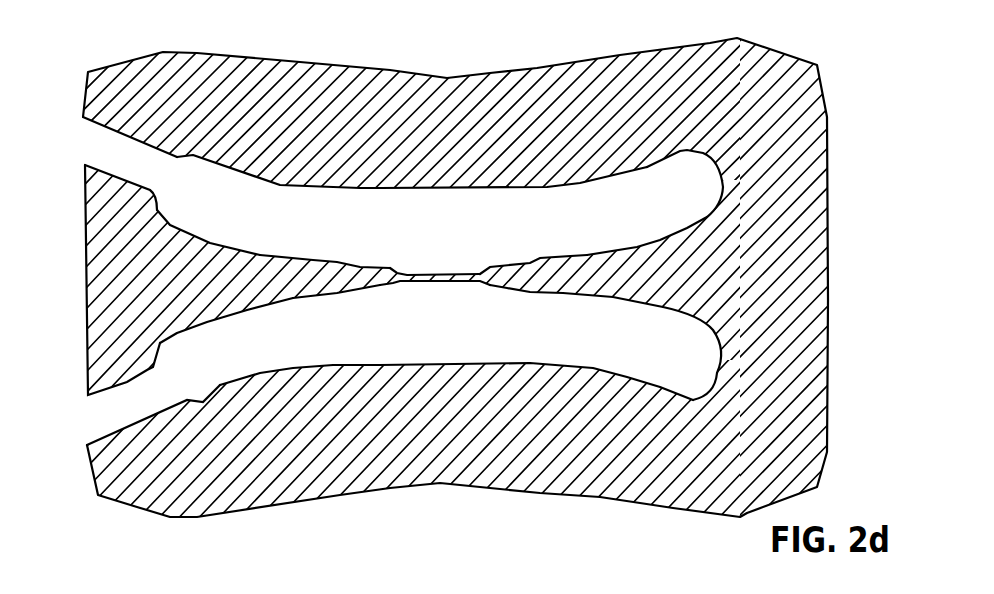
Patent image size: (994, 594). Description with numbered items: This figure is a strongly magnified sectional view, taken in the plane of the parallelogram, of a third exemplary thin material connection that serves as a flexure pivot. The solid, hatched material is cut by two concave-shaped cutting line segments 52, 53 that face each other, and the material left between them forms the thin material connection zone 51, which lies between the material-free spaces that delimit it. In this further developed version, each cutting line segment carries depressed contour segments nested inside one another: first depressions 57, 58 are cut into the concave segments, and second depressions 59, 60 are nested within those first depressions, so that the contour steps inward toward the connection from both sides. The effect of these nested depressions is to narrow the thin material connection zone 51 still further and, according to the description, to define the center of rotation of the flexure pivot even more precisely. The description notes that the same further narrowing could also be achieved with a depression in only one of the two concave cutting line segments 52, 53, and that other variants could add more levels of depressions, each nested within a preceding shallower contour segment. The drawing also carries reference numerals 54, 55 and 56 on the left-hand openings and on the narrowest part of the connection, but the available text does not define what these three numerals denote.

The thin material connection zone 51 is at (587, 262).
The cutting line segment 52 is at (692, 175).
The cutting line segment 53 is at (693, 344).
The upper channel inlet 54 is at (118, 167).
The lower channel inlet 55 is at (122, 405).
The thin neck of partition 56 is at (442, 287).
The first depression 57 is at (365, 290).
The first depression 58 is at (365, 257).
The second depression 59 is at (438, 263).
The second depression 60 is at (420, 285).